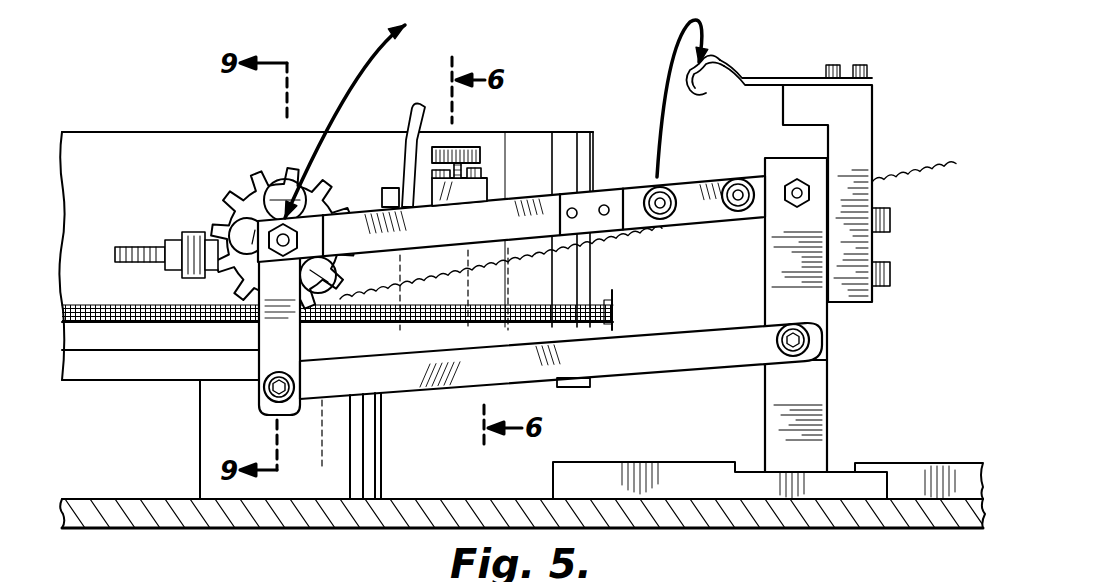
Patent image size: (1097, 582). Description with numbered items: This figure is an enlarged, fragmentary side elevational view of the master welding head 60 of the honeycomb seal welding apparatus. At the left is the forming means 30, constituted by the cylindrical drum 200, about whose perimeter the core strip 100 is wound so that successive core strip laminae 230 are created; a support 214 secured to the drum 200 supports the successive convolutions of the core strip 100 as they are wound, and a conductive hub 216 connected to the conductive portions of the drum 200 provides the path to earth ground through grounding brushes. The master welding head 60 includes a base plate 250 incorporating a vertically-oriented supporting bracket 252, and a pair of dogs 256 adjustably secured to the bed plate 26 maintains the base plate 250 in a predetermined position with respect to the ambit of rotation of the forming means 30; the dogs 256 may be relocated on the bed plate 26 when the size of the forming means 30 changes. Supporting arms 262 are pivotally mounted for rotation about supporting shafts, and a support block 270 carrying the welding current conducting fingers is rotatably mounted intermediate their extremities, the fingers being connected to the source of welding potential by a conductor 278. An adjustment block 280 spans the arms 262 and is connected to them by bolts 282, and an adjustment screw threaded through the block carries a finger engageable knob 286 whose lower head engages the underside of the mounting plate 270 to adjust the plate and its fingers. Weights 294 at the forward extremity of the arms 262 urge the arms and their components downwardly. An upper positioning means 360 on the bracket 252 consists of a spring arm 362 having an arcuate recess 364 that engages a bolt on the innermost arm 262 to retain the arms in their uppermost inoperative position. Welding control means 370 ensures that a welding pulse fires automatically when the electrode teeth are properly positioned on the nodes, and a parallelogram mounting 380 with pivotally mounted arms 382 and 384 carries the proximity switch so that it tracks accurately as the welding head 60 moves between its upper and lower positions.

The drum 200 is at (92, 136).
The forming means 30 is at (168, 128).
The support 214 is at (121, 358).
The support block 270 is at (400, 300).
The core strip laminae 230 is at (140, 305).
The parallelogram mounting 380 is at (530, 258).
The core strip 100 is at (620, 305).
The welding control means 370 is at (268, 158).
The weights 294 is at (192, 230).
The supporting arms 262 is at (697, 180).
The supporting bracket 252 is at (817, 392).
The upper positioning means 360 is at (806, 45).
The spring arm 362 is at (748, 78).
The arcuate recess 364 is at (690, 92).
The pivotally mounted arm 384 is at (272, 352).
The master welding head 60 is at (590, 405).
The pivotally mounted arm 382 is at (543, 229).
The conductor 278 is at (418, 104).
The adjustment block 280 is at (478, 193).
The bolts 282 is at (482, 176).
The finger engageable knob 286 is at (472, 147).
The conductive hub 216 is at (383, 465).
The base plate 250 is at (755, 480).
The dogs 256 is at (955, 462).
The bed plate 26 is at (118, 497).